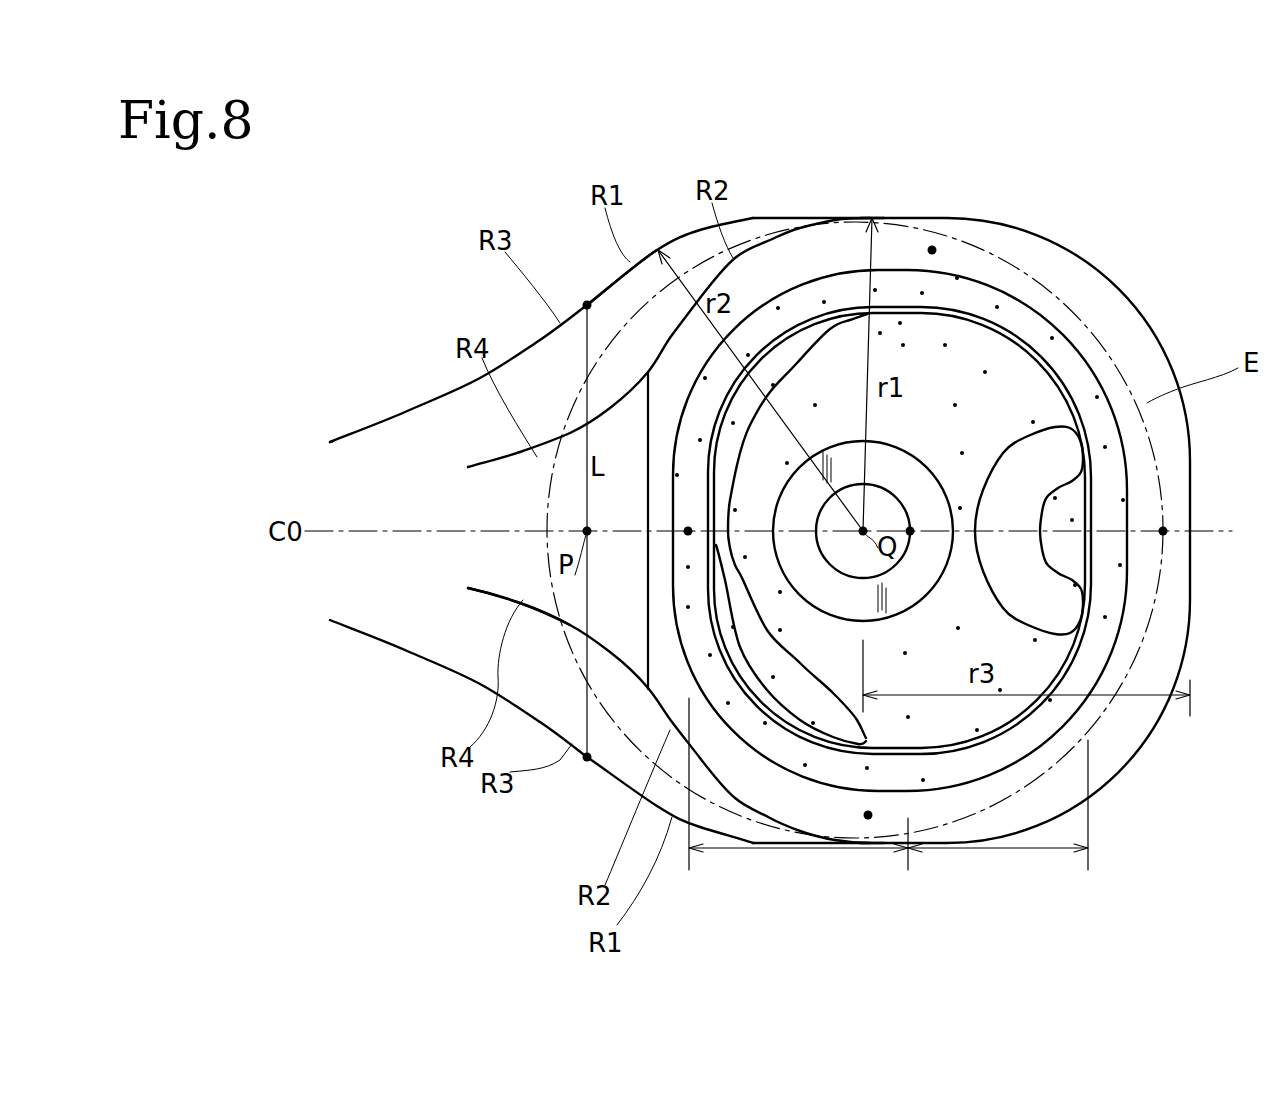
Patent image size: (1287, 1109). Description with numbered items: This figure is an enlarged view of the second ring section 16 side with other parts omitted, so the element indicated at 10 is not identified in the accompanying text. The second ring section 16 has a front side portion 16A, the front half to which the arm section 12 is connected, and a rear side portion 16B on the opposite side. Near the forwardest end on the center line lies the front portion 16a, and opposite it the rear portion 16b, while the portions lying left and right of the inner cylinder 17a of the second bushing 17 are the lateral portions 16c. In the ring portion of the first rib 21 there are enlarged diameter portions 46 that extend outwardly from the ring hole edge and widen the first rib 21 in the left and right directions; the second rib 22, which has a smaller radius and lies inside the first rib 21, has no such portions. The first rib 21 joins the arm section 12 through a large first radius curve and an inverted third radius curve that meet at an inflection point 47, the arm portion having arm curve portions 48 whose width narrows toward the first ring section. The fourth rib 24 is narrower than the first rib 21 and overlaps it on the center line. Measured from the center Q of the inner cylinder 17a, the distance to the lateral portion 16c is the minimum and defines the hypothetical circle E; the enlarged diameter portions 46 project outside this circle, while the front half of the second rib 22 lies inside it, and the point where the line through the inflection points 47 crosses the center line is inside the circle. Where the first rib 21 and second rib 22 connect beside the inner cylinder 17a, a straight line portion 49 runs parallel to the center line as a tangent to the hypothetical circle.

The seal member 10 is at (372, 452).
The arm section 12 is at (385, 598).
The second ring section 16 is at (1095, 263).
The front portion 16a is at (688, 531).
The rear portion 16b is at (1163, 531).
The lateral portions 16c is at (932, 250).
The front side portion 16A is at (798, 788).
The rear side portion 16B is at (998, 809).
The second bushing 17 is at (1042, 397).
The inner cylinder 17a is at (855, 457).
The first rib 21 is at (612, 288).
The second rib 22 is at (1043, 262).
The fourth rib 24 is at (490, 596).
The enlarged diameter portions 46 is at (540, 358).
The inflection point 47 is at (580, 297).
The arm curve portions 48 is at (405, 412).
The straight line portion 49 is at (872, 215).